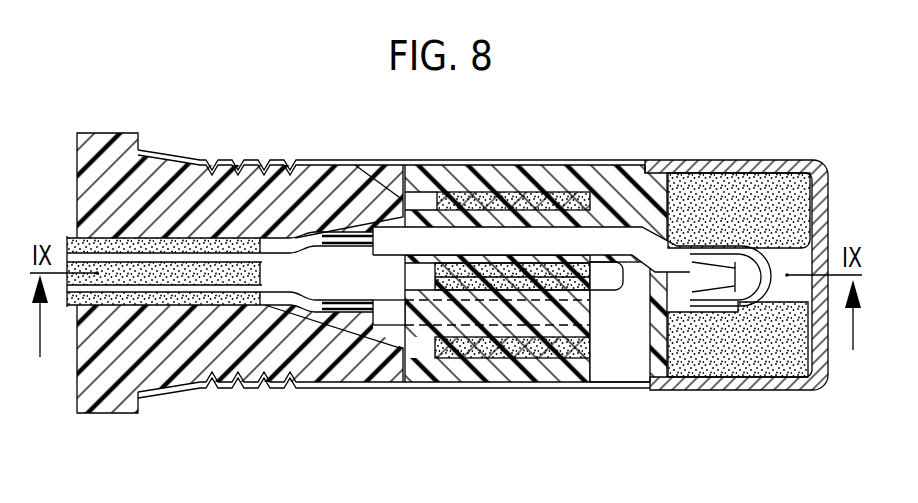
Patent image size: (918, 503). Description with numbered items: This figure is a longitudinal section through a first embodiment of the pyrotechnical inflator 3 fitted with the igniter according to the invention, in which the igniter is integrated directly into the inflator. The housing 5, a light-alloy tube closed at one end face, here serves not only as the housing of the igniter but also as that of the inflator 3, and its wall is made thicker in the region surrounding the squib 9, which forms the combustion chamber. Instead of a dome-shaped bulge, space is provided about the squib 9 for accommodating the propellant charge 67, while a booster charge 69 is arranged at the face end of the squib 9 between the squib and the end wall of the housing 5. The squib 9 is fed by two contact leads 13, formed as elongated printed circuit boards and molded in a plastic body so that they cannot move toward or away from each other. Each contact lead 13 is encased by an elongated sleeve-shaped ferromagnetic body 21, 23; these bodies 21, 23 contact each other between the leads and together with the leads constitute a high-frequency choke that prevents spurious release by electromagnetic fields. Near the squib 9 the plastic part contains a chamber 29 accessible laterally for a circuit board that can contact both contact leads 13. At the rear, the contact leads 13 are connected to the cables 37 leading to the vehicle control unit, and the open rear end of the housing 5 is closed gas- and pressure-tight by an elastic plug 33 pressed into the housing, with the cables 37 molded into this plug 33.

The pyrotechnical inflator 3 is at (538, 405).
The housing 5 is at (565, 163).
The squib 9 is at (737, 316).
The contact leads 13 is at (388, 315).
The ferromagnetic body 21 is at (472, 190).
The ferromagnetic body 23 is at (487, 348).
The chamber 29 is at (620, 365).
The elastic plug 33 is at (245, 345).
The cables 37 is at (182, 293).
The propellant charge 67 is at (741, 195).
The booster charge 69 is at (813, 242).